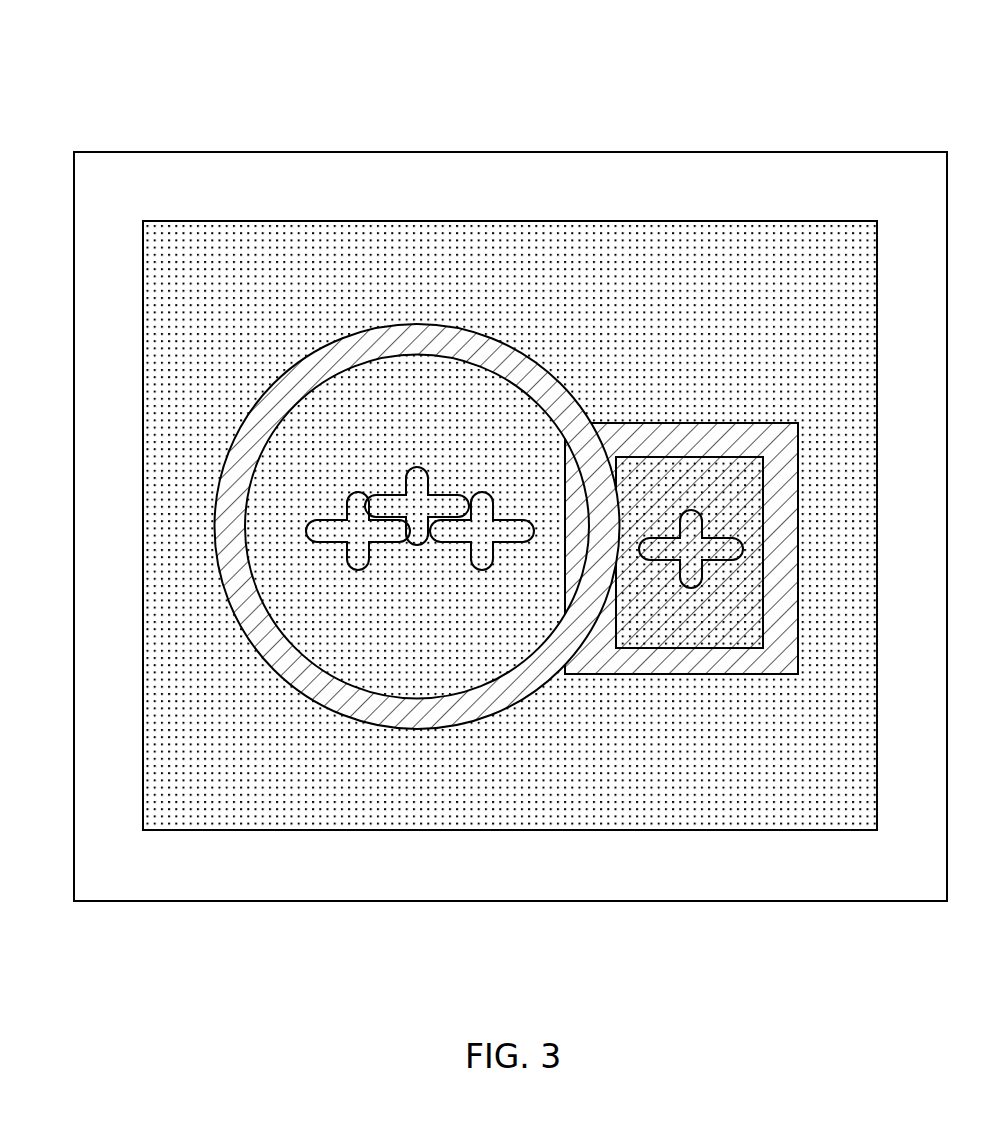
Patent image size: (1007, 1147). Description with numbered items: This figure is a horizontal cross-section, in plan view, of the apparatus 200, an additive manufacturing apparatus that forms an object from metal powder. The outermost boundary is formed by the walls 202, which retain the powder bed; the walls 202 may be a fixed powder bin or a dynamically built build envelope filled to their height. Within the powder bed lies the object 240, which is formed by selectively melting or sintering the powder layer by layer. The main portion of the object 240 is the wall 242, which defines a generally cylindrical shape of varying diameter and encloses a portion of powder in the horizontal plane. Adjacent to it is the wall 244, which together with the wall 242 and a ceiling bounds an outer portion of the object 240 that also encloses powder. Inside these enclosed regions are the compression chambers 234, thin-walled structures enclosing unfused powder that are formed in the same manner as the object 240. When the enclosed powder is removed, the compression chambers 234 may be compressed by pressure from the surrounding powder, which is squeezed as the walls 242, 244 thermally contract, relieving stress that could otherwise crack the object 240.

The apparatus 200 is at (165, 63).
The walls 202 is at (146, 178).
The compression chambers 234 is at (695, 513).
The object 240 is at (402, 324).
The wall 242 is at (487, 342).
The wall 244 is at (777, 422).